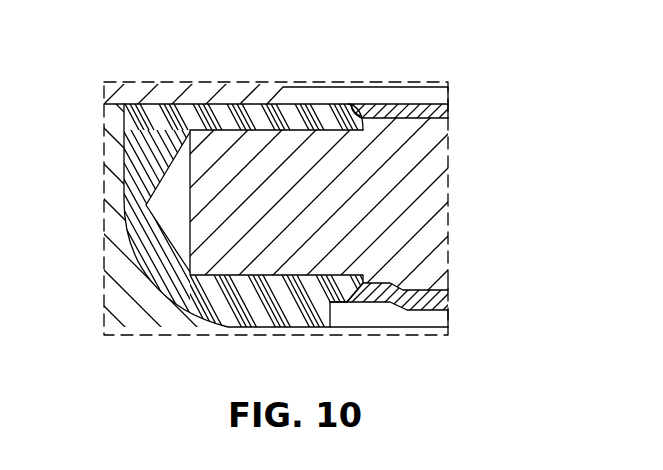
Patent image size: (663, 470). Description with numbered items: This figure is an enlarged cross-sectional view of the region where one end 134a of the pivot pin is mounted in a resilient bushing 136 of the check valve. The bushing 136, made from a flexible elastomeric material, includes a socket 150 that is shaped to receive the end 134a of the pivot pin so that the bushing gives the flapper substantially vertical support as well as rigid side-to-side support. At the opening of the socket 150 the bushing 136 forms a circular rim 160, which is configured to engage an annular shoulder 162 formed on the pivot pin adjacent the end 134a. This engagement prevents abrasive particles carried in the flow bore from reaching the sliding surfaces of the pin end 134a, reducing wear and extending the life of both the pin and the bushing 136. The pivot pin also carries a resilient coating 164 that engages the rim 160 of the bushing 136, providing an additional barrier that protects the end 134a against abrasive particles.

The end of the pivot pin 134a is at (253, 104).
The resilient bushing 136 is at (150, 285).
The socket 150 is at (240, 128).
The circular rim 160 is at (357, 127).
The annular shoulder 162 is at (350, 104).
The resilient coating 164 is at (423, 104).